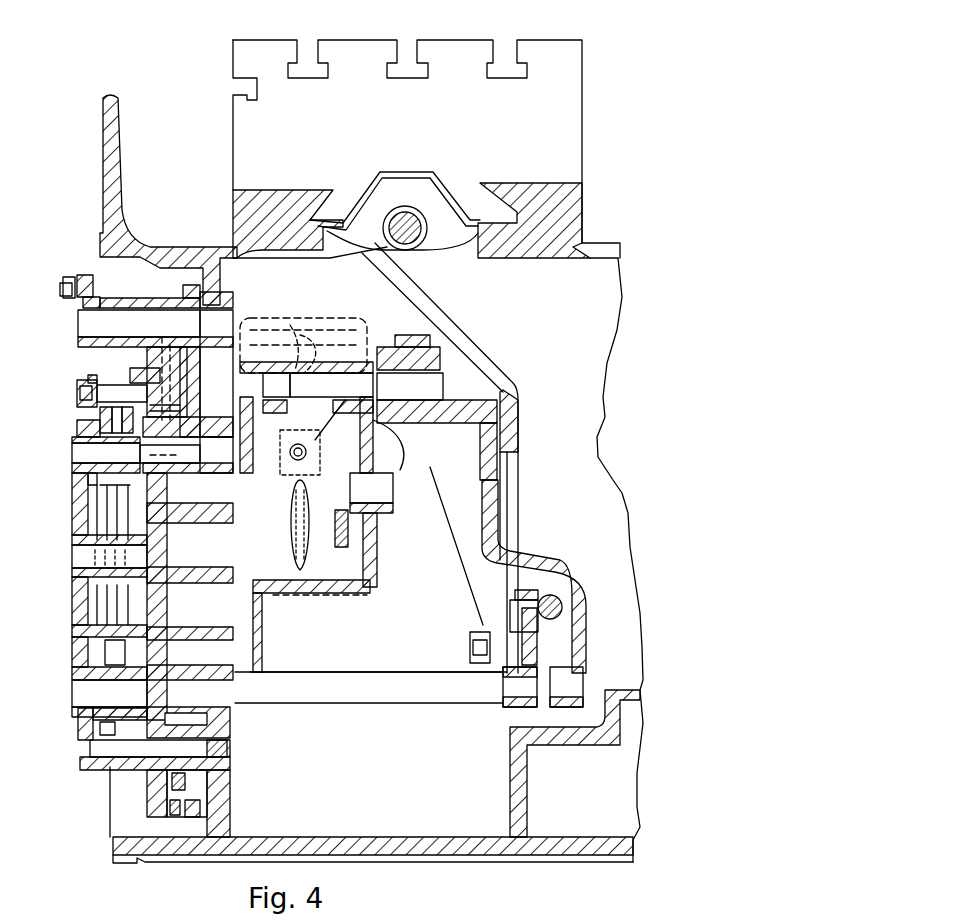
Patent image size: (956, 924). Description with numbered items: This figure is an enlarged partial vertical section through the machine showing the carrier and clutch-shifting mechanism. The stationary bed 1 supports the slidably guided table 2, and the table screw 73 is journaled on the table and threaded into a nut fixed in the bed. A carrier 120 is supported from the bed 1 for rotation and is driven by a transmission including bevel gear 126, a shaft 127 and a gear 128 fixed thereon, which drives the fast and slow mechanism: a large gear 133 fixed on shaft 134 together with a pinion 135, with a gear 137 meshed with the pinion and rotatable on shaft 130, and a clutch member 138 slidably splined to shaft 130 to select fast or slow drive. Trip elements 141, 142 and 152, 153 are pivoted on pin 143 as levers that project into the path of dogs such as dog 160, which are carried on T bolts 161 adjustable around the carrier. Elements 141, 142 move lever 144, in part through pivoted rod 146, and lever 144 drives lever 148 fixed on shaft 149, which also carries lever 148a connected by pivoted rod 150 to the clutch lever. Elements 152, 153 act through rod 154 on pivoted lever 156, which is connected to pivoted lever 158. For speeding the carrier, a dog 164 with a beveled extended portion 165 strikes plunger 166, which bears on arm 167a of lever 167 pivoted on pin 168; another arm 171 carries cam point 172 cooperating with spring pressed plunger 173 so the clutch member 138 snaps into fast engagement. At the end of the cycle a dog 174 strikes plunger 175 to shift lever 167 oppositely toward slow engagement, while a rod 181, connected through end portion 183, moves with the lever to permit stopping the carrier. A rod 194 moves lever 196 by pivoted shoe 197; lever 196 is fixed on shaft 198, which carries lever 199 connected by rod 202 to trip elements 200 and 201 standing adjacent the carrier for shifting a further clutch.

The bed 1 is at (135, 862).
The table 2 is at (424, 46).
The table screw 73 is at (420, 238).
The carrier 120 is at (148, 820).
The bevel gear 126 is at (380, 350).
The shaft 127 is at (443, 383).
The gear 128 is at (248, 340).
The shaft 130 is at (385, 415).
The large gear 133 is at (245, 425).
The shaft 134 is at (330, 435).
The pinion 135 is at (165, 368).
The gear 137 is at (340, 550).
The clutch member 138 is at (305, 335).
The trip element 141 is at (75, 493).
The trip element 142 is at (95, 415).
The pin 143 is at (72, 455).
The lever 144 is at (110, 615).
The pivoted rod 146 is at (85, 548).
The lever 148 is at (232, 302).
The lever 148a is at (88, 270).
The shaft 149 is at (80, 327).
The pivoted rod 150 is at (70, 298).
The trip element 152 is at (75, 483).
The trip element 153 is at (90, 432).
The rod 154 is at (100, 517).
The pivoted lever 156 is at (115, 650).
The pivoted lever 158 is at (265, 605).
The dog 160 is at (88, 377).
The T bolt 161 is at (80, 393).
The dog 164 is at (135, 375).
The extended portion 165 is at (162, 350).
The plunger 166 is at (207, 365).
The lever 167 is at (275, 393).
The arm 167a is at (292, 320).
The pin 168 is at (331, 393).
The arm 171 is at (371, 488).
The cam point 172 is at (355, 520).
The spring pressed plunger 173 is at (305, 605).
The dog 174 is at (185, 820).
The plunger 175 is at (150, 453).
The rod 181 is at (380, 345).
The end portion 183 is at (315, 440).
The rod 194 is at (563, 610).
The lever 196 is at (533, 648).
The pivoted shoe 197 is at (548, 572).
The shaft 198 is at (318, 708).
The lever 199 is at (95, 725).
The trip element 200 is at (75, 470).
The trip element 201 is at (95, 445).
The rod 202 is at (95, 680).